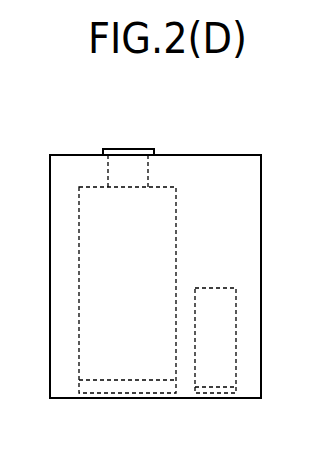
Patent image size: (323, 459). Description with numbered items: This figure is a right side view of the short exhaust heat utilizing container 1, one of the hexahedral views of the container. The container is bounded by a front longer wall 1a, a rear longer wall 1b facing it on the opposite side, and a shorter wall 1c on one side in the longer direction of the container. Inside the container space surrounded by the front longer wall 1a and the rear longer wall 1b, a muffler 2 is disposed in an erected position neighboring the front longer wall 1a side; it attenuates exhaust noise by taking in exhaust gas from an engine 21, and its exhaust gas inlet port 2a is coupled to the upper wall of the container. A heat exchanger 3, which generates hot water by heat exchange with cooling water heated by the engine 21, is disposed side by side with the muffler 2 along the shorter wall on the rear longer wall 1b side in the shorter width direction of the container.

The short exhaust heat utilizing container 1 is at (245, 127).
The front longer wall 1a is at (262, 233).
The rear longer wall 1b is at (52, 362).
The 20 f side shorter wall 1c is at (233, 211).
The muffler 2 is at (139, 362).
The exhaust gas inlet port 2a is at (129, 149).
The engine 21 is at (133, 175).
The heat exchanger 3 is at (213, 362).